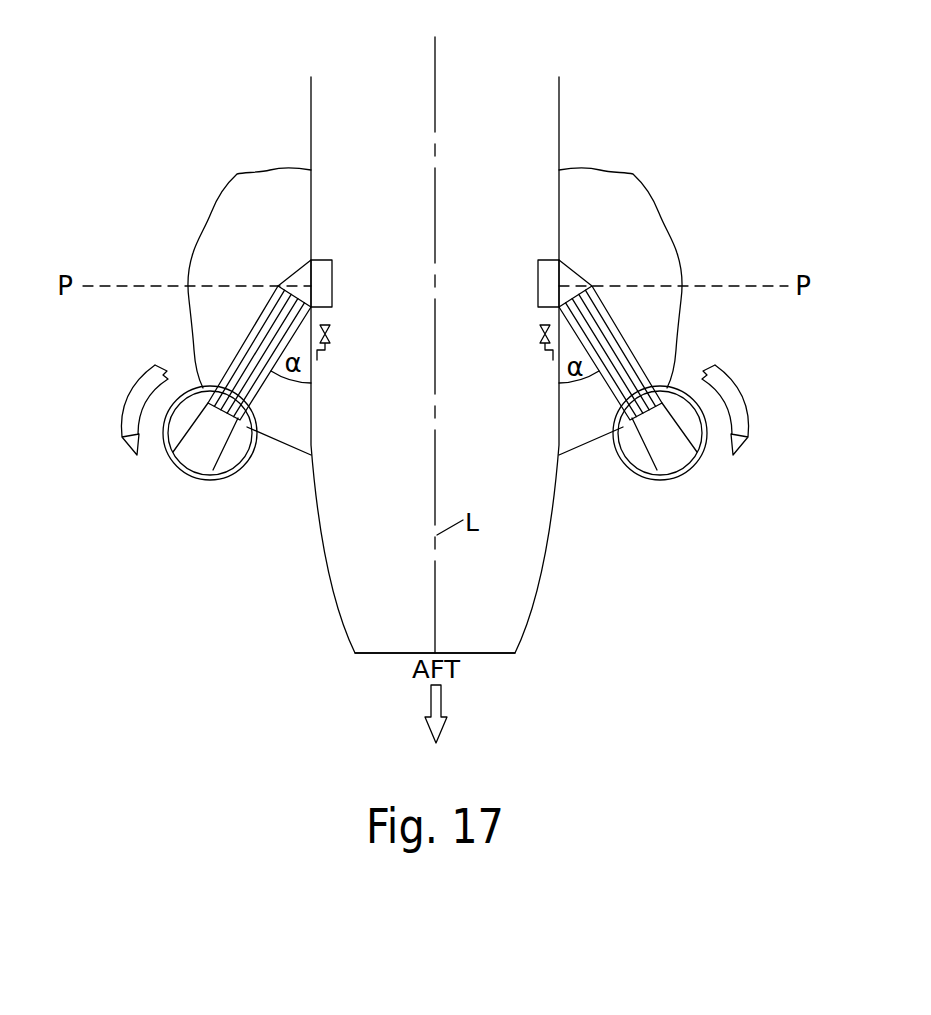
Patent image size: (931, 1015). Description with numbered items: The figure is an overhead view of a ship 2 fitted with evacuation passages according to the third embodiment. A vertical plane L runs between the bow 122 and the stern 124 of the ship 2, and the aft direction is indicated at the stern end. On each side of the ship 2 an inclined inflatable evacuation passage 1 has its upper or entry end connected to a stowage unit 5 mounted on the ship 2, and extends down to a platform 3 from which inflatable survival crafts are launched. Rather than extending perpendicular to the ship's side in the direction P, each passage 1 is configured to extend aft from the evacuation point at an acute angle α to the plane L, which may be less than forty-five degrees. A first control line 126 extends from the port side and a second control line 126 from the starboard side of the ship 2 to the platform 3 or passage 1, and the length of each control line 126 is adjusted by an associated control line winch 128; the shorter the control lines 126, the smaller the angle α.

The inflatable evacuation passage 1 is at (253, 336).
The ship 2 is at (517, 568).
The platform 3 is at (172, 458).
The stowage unit 5 is at (320, 280).
The bow 122 is at (468, 76).
The stern 124 is at (472, 643).
The control line 126 is at (290, 447).
The control line winch 128 is at (330, 349).